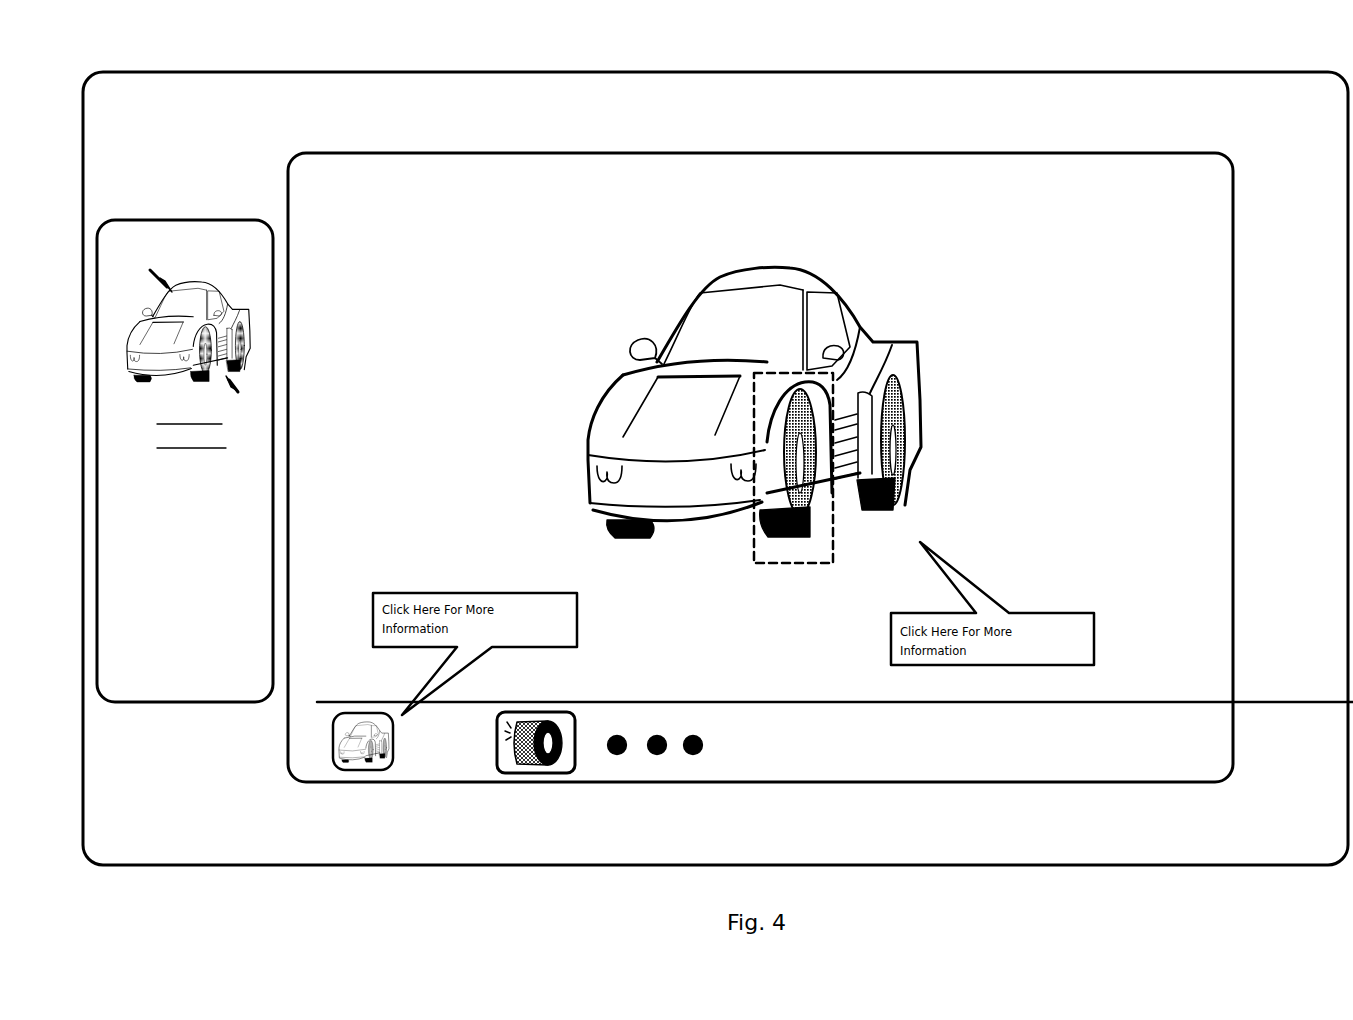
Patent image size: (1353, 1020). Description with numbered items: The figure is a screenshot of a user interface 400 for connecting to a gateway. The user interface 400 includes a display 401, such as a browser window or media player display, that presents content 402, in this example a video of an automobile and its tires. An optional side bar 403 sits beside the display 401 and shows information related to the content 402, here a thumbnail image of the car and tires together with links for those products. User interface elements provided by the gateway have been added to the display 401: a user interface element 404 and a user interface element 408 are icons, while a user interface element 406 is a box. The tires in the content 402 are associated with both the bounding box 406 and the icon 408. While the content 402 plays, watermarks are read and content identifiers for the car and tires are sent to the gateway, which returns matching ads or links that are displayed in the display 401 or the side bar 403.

The user interface 400 is at (1293, 72).
The display 401 is at (850, 153).
The content 402 is at (1091, 234).
The side bar 403 is at (190, 220).
The user interface element 404 is at (395, 747).
The user interface element 406 is at (838, 568).
The user interface element 408 is at (668, 722).